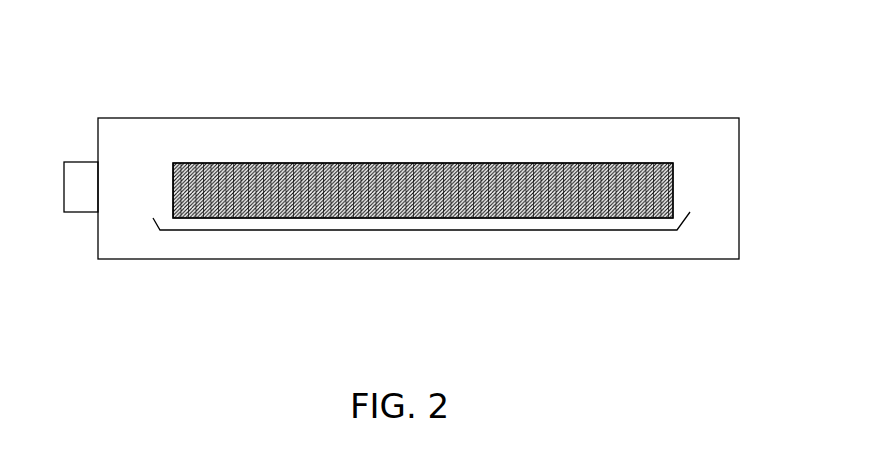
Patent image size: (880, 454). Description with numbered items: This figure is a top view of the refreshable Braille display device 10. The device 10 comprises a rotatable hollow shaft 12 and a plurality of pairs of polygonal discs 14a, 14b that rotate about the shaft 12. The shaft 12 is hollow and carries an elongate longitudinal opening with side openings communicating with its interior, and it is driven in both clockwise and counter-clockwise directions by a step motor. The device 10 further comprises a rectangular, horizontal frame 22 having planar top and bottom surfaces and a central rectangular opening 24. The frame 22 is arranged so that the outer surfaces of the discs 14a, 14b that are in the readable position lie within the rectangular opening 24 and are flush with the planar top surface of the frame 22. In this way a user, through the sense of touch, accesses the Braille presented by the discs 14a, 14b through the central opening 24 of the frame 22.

The refreshable Braille display device 10 is at (582, 92).
The rotatable hollow shaft 12 is at (80, 192).
The polygonal disc 14a is at (176, 218).
The polygonal disc 14b is at (181, 163).
The horizontal frame 22 is at (697, 247).
The central rectangular opening 24 is at (416, 230).